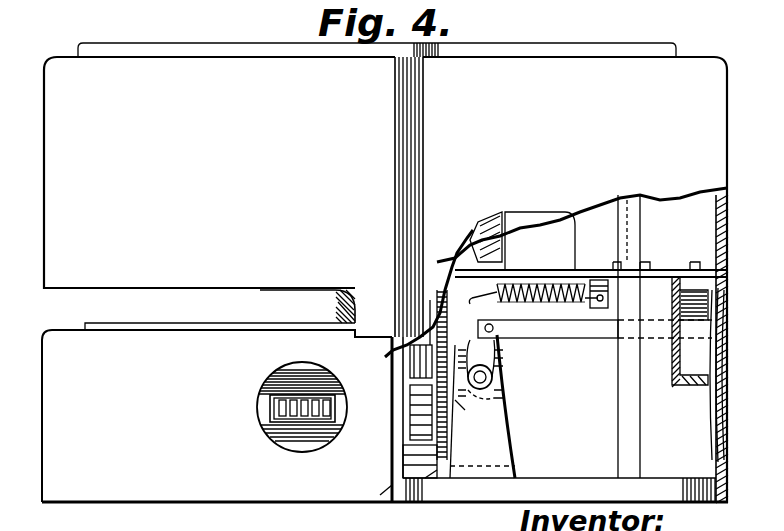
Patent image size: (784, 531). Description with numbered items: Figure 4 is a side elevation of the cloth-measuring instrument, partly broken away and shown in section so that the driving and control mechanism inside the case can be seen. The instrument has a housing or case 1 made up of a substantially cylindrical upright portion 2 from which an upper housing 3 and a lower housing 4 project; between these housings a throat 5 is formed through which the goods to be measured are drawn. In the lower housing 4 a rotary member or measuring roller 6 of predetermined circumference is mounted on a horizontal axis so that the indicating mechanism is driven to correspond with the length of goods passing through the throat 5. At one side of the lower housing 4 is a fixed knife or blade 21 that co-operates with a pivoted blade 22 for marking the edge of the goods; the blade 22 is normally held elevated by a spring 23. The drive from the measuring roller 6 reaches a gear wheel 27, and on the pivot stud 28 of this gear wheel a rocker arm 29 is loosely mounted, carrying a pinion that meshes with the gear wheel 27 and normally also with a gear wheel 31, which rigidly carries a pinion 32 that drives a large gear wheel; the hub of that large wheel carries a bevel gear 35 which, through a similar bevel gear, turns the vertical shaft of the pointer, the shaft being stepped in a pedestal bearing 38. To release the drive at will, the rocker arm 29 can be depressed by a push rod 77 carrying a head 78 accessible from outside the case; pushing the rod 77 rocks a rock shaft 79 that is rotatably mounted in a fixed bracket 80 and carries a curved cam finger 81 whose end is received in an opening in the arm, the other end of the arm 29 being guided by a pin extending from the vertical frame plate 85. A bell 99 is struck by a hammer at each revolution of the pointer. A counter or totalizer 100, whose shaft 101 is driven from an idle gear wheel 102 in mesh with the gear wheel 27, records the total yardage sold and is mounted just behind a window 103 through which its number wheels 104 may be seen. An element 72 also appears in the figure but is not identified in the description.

The housing or case 1 is at (465, 62).
The cylindrical upright portion 2 is at (575, 280).
The upper housing 3 is at (219, 172).
The lower housing 4 is at (385, 349).
The throat 5 is at (75, 306).
The measuring roller 6 is at (163, 328).
The fixed knife 21 is at (392, 486).
The pivoted blade 22 is at (326, 304).
The spring 23 is at (525, 338).
The gear wheel 27 is at (462, 395).
The pivot stud 28 is at (452, 410).
The rocker arm 29 is at (437, 372).
The gear wheel 31 is at (397, 343).
The pinion 32 is at (428, 312).
The bevel gear 35 is at (502, 240).
The pedestal bearing 38 is at (507, 237).
The slide block 72 is at (418, 348).
The push rod 77 is at (595, 335).
The head 78 is at (722, 338).
The rock shaft 79 is at (486, 377).
The fixed bracket 80 is at (500, 440).
The curved cam finger 81 is at (472, 300).
The vertical frame plate 85 is at (396, 430).
The bell 99 is at (677, 208).
The counter or totalizer 100 is at (270, 412).
The shaft 101 is at (432, 416).
The idle gear wheel 102 is at (428, 470).
The window 103 is at (264, 382).
The number wheels 104 is at (316, 418).